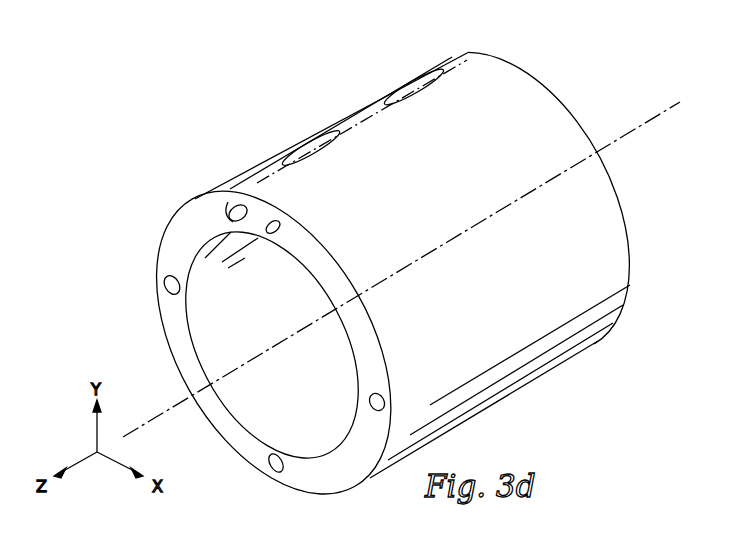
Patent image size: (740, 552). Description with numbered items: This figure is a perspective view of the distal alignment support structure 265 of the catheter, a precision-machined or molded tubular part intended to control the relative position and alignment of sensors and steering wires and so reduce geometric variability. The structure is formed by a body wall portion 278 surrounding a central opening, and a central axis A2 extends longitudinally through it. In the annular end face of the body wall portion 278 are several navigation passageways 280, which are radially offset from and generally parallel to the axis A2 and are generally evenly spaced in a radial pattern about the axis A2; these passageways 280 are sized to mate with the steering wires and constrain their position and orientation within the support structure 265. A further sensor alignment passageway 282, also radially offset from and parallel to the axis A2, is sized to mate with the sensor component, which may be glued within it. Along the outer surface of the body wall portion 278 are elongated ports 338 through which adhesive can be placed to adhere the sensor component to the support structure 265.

The distal alignment support structure 265 is at (390, 269).
The body wall portion 278 is at (512, 80).
The navigation passageways 280 is at (168, 286).
The passageway 282 is at (226, 205).
The ports 338 is at (312, 150).
The central axis A2 is at (620, 138).